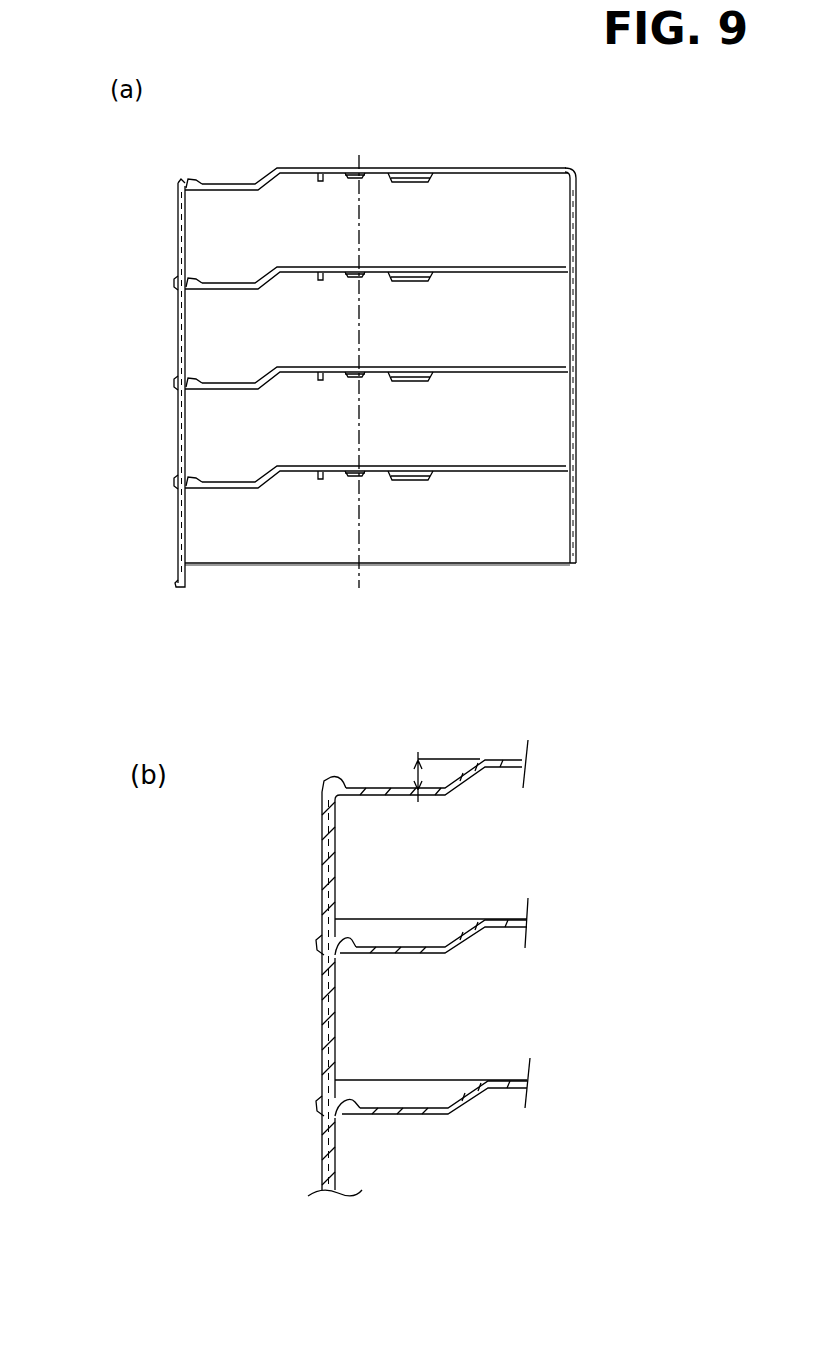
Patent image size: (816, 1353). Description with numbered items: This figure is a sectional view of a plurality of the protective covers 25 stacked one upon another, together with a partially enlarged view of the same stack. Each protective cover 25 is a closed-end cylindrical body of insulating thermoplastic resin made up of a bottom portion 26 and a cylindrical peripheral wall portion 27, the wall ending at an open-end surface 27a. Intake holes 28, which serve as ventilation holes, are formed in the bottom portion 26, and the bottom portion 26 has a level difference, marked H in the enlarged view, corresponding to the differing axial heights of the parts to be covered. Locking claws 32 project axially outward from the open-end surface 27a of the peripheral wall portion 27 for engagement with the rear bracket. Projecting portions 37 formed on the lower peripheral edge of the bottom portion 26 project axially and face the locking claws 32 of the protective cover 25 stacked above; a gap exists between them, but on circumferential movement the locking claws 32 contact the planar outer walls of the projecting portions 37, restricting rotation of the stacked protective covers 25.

The protective cover 25 is at (578, 406).
The bottom portion 26 is at (296, 168).
The peripheral wall portion 27 is at (178, 432).
The open-end surface 27a is at (453, 565).
The intake hole 28 is at (410, 178).
The locking claw 32 is at (176, 283).
The projecting portion 37 is at (192, 180).